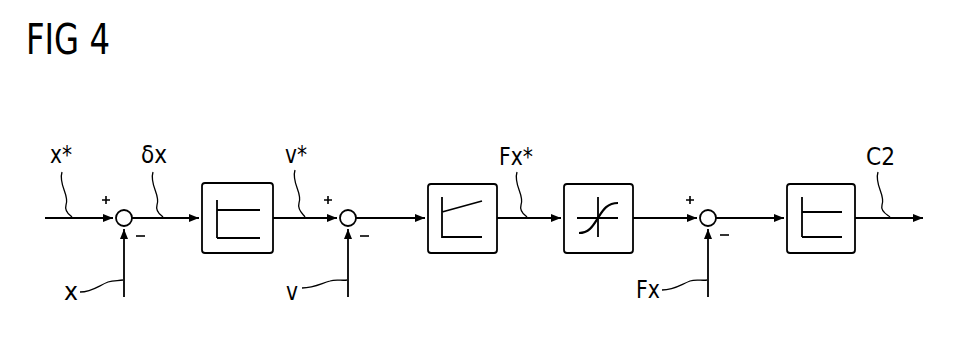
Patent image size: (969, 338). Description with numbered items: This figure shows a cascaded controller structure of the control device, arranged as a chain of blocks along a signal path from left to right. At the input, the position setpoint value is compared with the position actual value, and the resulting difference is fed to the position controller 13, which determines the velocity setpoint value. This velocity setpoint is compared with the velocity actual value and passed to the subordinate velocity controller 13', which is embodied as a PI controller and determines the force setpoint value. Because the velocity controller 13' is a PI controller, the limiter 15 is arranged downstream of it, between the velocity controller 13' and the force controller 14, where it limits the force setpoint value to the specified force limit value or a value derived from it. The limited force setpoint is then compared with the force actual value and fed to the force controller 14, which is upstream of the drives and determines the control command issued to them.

The position controller 13 is at (237, 176).
The velocity controller 13' is at (462, 176).
The limiter 15 is at (602, 184).
The force controller 14 is at (823, 184).